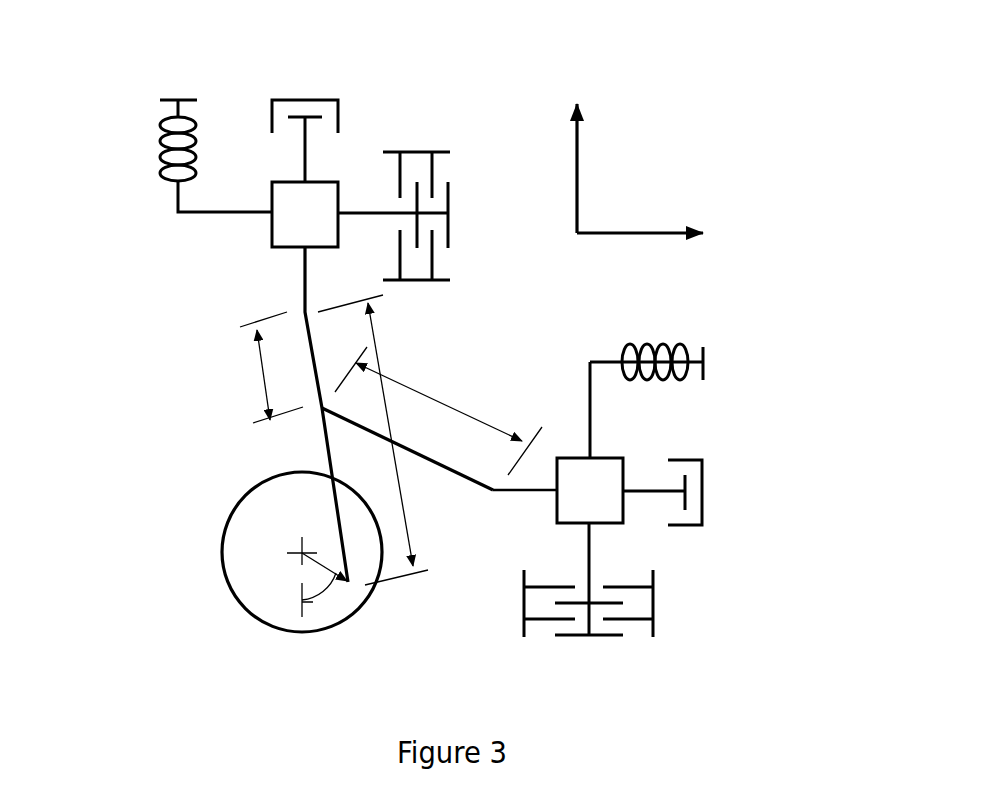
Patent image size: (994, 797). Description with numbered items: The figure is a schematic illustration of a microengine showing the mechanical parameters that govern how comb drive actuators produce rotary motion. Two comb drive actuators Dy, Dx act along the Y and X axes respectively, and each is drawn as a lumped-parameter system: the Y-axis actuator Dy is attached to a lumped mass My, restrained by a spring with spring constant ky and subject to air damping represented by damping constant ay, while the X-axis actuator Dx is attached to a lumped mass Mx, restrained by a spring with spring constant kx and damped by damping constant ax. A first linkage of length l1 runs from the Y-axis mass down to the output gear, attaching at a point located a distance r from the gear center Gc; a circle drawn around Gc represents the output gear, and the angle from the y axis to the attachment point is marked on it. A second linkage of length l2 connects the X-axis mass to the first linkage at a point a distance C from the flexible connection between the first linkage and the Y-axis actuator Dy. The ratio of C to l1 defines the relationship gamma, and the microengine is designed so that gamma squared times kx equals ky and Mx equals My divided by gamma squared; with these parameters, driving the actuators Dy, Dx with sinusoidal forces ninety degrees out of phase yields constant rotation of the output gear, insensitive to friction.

The spring constant ky is at (147, 130).
The comb drive actuator Dy is at (372, 75).
The lumped mass My is at (272, 228).
The damping constant ay is at (433, 132).
The spring constant kx is at (688, 330).
The lumped mass Mx is at (623, 460).
The comb drive actuator Dx is at (735, 475).
The damping constant ax is at (670, 620).
The distance C is at (255, 360).
The length of first linkage l1 is at (382, 345).
The length of second linkage l2 is at (432, 392).
The center of output gear Gc is at (297, 553).
The distance r is at (317, 570).